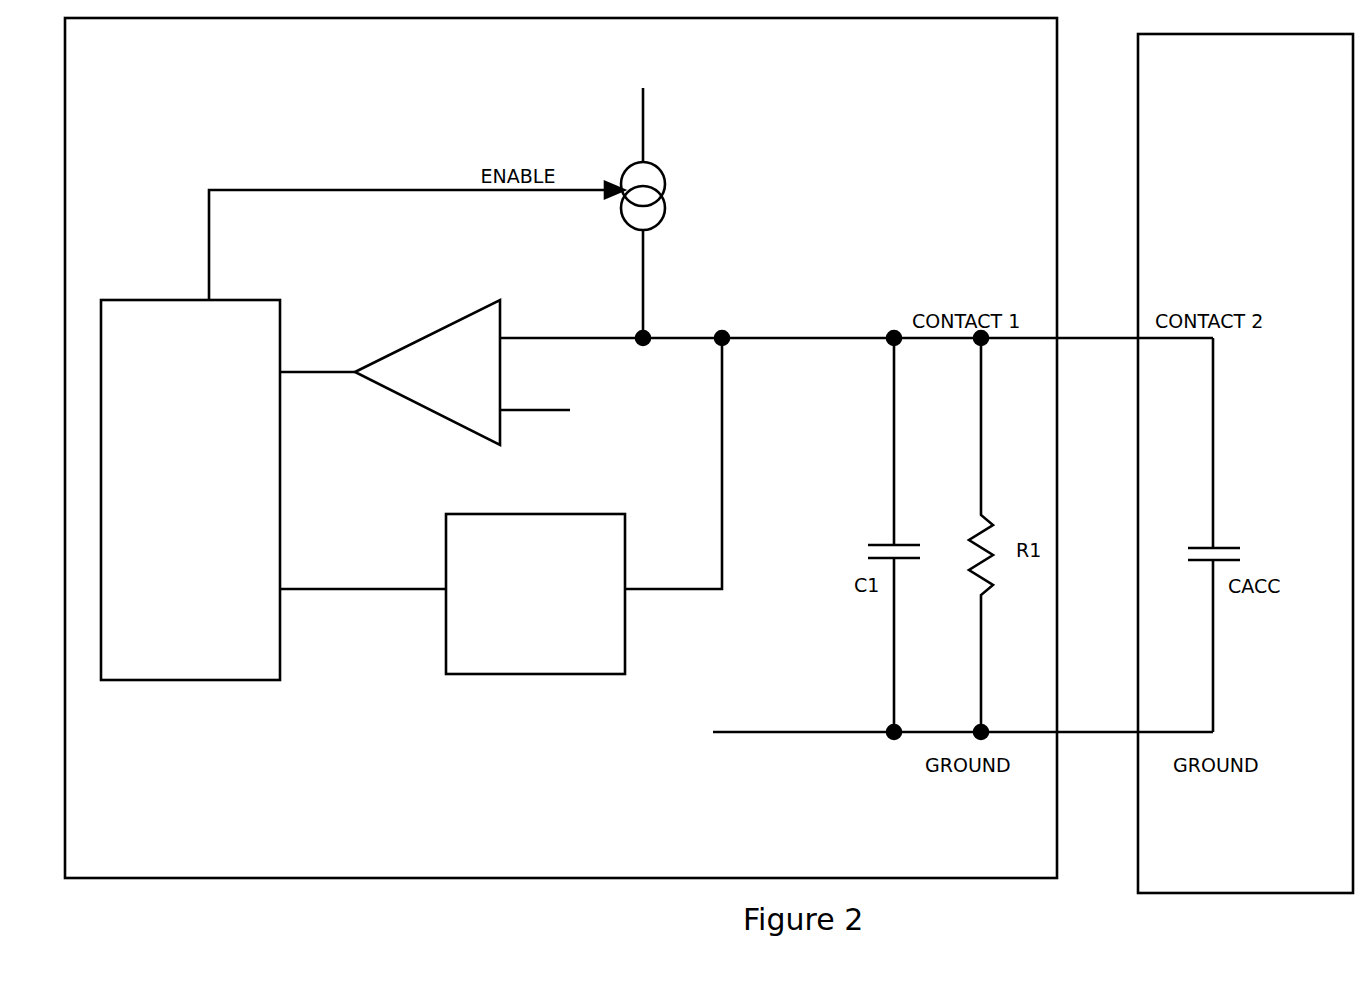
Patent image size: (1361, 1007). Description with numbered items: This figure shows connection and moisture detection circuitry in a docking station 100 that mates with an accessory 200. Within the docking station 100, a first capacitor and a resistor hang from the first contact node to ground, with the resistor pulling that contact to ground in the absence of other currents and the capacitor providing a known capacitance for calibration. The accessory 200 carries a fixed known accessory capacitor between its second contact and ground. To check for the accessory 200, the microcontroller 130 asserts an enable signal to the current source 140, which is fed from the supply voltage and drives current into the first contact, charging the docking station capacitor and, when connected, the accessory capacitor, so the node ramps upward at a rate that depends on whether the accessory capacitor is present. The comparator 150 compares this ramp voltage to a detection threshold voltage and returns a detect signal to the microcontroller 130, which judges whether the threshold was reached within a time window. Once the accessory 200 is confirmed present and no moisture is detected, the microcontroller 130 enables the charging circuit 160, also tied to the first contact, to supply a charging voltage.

The docking station 100 is at (480, 878).
The microcontroller 130 is at (190, 490).
The current source I1 140 is at (668, 197).
The comparator 150 is at (461, 372).
The charging circuit 160 is at (501, 506).
The accessory 200 is at (1200, 893).